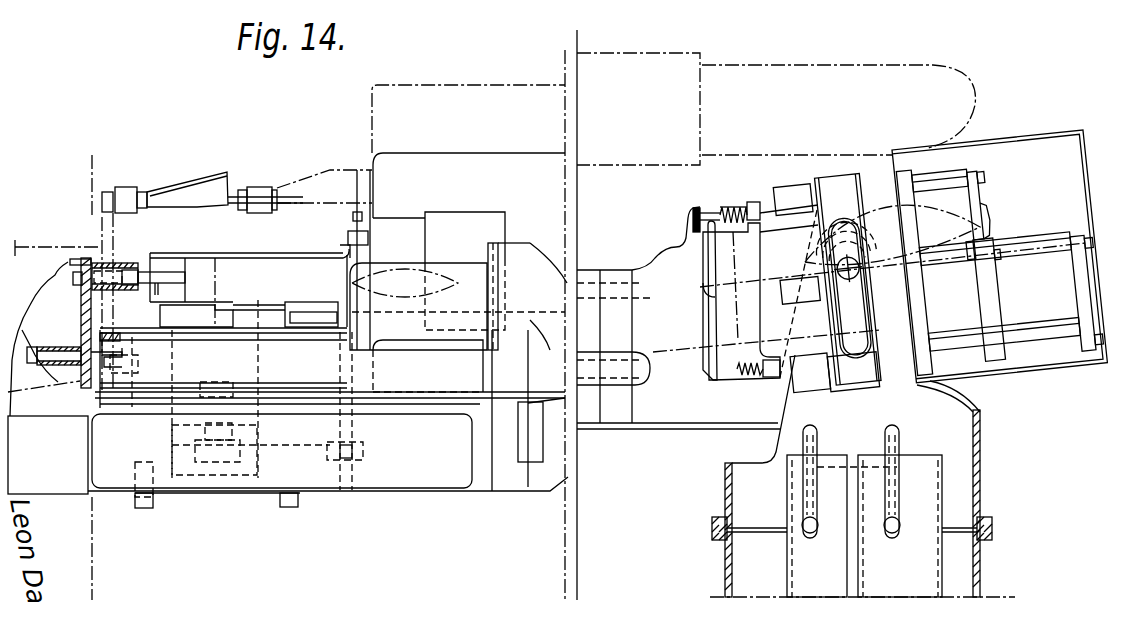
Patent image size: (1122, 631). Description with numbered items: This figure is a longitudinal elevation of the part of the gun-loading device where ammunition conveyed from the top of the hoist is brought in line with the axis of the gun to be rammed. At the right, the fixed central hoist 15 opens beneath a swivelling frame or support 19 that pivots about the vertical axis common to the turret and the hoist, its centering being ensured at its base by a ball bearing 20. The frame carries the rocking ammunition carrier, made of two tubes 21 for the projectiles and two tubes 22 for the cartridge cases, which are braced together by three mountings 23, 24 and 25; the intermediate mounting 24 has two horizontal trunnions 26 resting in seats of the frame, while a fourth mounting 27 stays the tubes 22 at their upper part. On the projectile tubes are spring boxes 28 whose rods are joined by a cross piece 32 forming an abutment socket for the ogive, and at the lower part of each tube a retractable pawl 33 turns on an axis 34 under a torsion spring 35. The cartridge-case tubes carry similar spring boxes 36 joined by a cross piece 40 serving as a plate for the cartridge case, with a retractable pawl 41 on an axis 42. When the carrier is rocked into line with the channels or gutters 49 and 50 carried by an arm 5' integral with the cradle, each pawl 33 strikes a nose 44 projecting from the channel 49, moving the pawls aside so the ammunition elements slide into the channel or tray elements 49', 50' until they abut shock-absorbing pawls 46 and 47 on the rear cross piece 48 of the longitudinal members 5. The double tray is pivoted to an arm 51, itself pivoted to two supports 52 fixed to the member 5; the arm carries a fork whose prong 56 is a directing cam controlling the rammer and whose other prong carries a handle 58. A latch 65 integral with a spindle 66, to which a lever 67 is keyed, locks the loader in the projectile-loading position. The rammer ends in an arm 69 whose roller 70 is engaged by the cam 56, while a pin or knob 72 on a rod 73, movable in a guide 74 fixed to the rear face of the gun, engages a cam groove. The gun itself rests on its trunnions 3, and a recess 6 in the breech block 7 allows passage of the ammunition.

The trunnions 3 is at (826, 254).
The longitudinal members 5 is at (282, 465).
The arm 5' is at (528, 423).
The recess 6 is at (403, 222).
The breech block 7 is at (457, 158).
The central hoist 15 is at (932, 505).
The frame or support 19 is at (982, 473).
The ball bearing 20 is at (716, 534).
The tubes 21 is at (807, 228).
The tubes 22 is at (768, 378).
The mounting 23 is at (918, 311).
The intermediate mounting 24 is at (857, 376).
The mounting 25 is at (752, 312).
The horizontal trunnions 26 is at (848, 280).
The fourth mounting 27 is at (984, 316).
The spring boxes 28 is at (790, 196).
The cross piece 32 is at (973, 196).
The retractable pawl 33 is at (700, 208).
The axis 34 is at (738, 208).
The torsion spring 35 is at (731, 205).
The spring boxes 36 is at (820, 377).
The cross piece 40 is at (1082, 295).
The retractable pawl 41 is at (714, 386).
The axis 42 is at (745, 376).
The nose 44 is at (680, 217).
The shock-absorbing pawl 46 is at (172, 275).
The shock-absorbing pawl 47 is at (113, 337).
The rear cross piece 48 is at (80, 386).
The channel or gutter 49 is at (550, 271).
The channel or tray element 49' is at (249, 250).
The channel or gutter 50 is at (514, 339).
The channel or tray element 50' is at (249, 310).
The arm 51 is at (223, 503).
The supports 52 is at (145, 504).
The prong or directing cam 56 is at (110, 231).
The handle 58 is at (47, 251).
The latch 65 is at (203, 433).
The spindle 66 is at (315, 433).
The lever 67 is at (346, 450).
The arm 69 is at (189, 188).
The roller 70 is at (106, 191).
The pin or knob 72 is at (353, 216).
The rod 73 is at (348, 247).
The guide 74 is at (368, 238).